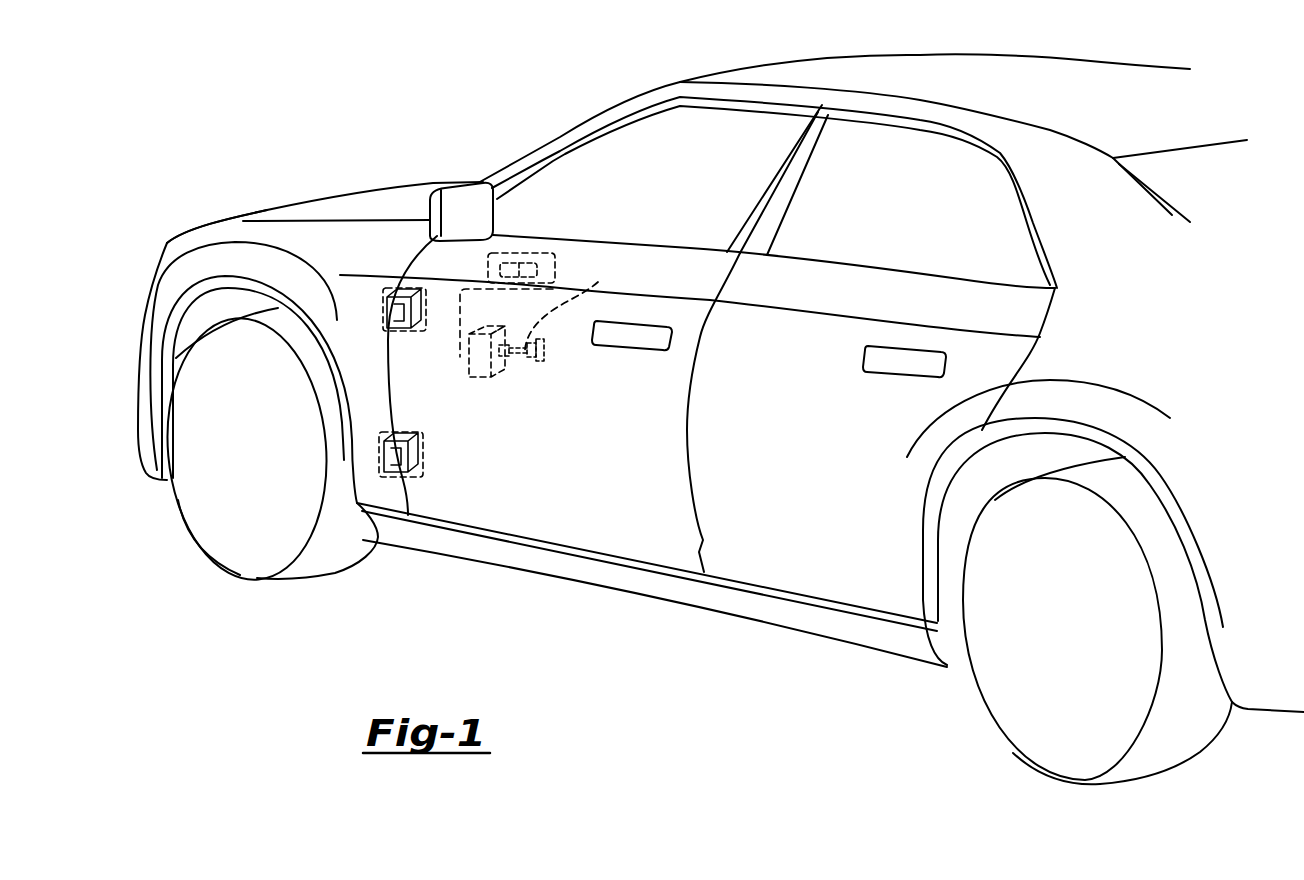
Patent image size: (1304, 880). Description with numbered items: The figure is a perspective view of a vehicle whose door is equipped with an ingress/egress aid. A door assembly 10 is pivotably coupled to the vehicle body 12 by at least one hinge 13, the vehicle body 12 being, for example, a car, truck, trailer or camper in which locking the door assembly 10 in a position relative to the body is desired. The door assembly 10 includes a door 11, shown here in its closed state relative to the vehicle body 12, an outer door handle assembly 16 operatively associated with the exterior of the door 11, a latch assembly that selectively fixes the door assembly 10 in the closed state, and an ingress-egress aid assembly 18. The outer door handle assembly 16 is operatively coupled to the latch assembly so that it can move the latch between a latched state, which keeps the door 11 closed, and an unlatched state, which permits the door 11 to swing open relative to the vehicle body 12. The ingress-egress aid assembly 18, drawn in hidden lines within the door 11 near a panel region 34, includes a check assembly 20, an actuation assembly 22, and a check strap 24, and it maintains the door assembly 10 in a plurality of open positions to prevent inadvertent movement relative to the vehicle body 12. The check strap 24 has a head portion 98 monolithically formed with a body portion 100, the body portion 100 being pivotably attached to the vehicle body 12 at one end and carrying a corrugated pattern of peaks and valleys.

The door assembly 10 is at (600, 214).
The door 11 is at (548, 520).
The vehicle body 12 is at (272, 203).
The hinge 13 is at (378, 338).
The outer door handle assembly 16 is at (665, 364).
The ingress-egress aid assembly 18 is at (514, 397).
The check assembly 20 is at (468, 388).
The actuation assembly 22 is at (522, 246).
The check strap 24 is at (546, 372).
The door panel region 34 is at (446, 289).
The head portion 98 is at (548, 357).
The body portion 100 is at (577, 301).